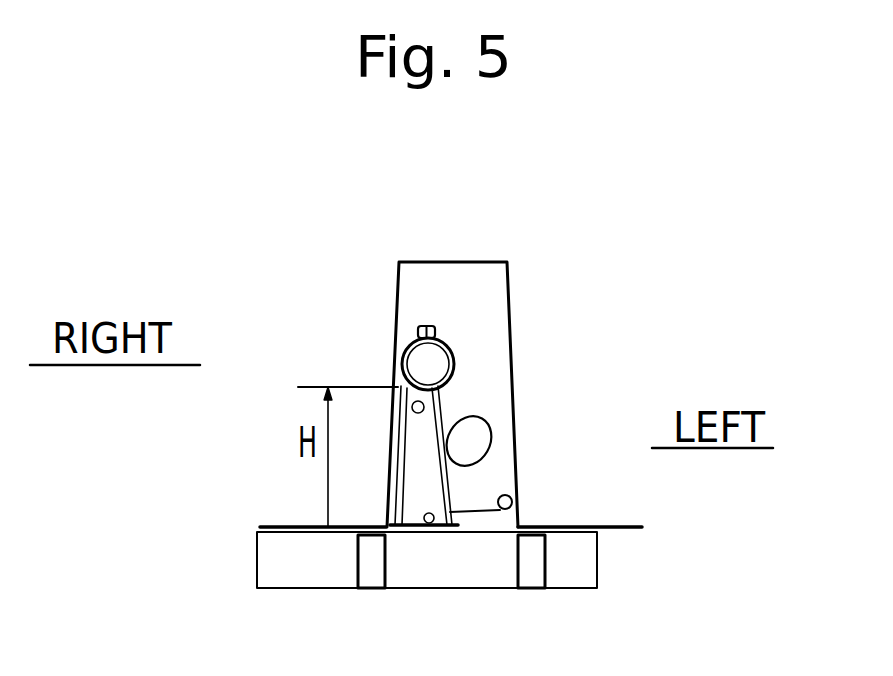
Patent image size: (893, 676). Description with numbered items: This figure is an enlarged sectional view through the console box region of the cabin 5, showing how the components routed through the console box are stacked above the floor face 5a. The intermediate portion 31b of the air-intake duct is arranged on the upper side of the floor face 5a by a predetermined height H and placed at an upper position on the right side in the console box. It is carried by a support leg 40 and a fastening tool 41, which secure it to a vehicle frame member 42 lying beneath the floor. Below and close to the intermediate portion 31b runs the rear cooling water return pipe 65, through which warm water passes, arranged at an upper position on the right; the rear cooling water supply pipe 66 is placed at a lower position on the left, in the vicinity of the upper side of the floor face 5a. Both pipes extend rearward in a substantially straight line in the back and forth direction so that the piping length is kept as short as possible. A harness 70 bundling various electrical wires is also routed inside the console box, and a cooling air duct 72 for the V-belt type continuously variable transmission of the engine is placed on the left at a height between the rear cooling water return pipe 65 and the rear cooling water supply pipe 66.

The cabin 5 is at (455, 215).
The floor face 5a is at (310, 527).
The intermediate portion 31b is at (440, 360).
The support leg 40 is at (399, 492).
The fastening tool 41 is at (415, 339).
The vehicle frame member 42 is at (482, 590).
The rear cooling water return pipe 65 is at (412, 407).
The rear cooling water supply pipe 66 is at (512, 493).
The harness 70 is at (433, 524).
The cooling air duct 72 is at (487, 422).